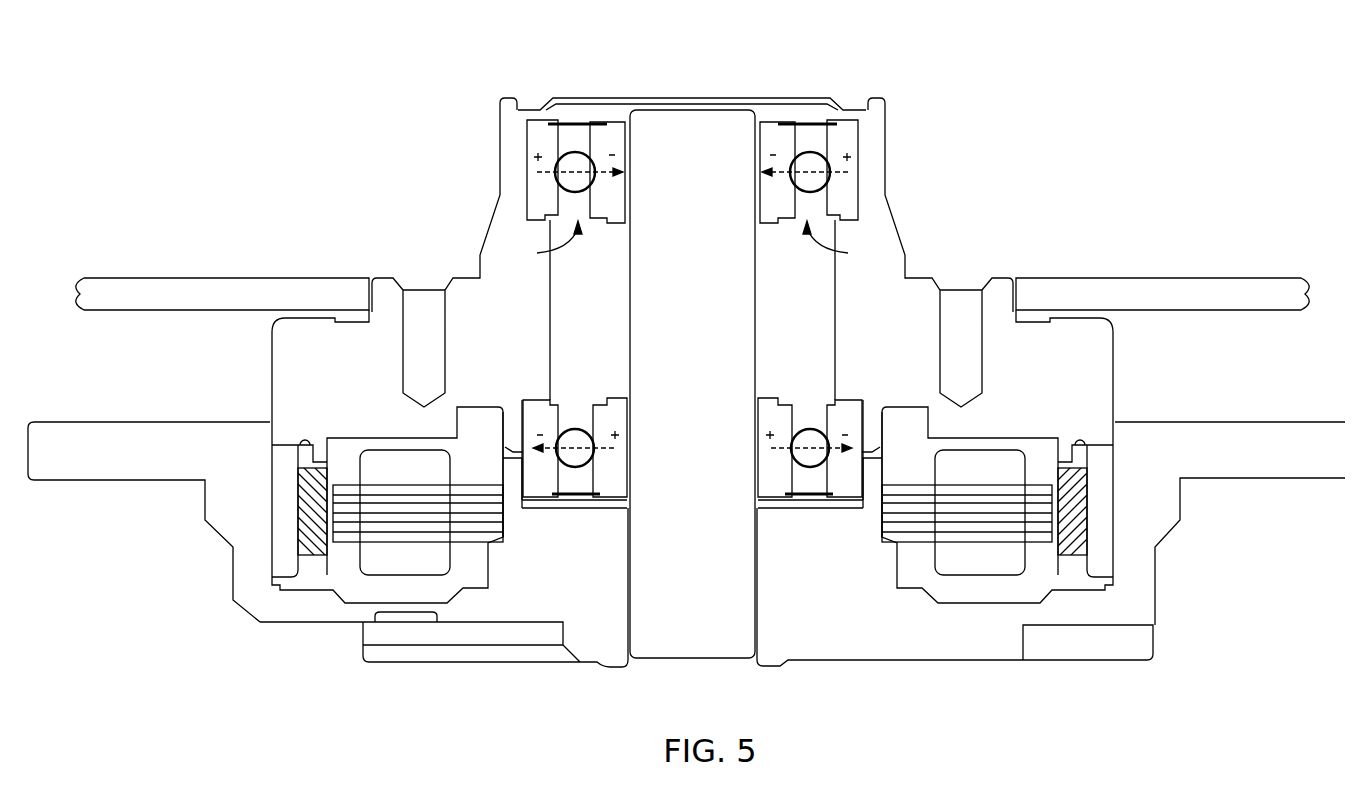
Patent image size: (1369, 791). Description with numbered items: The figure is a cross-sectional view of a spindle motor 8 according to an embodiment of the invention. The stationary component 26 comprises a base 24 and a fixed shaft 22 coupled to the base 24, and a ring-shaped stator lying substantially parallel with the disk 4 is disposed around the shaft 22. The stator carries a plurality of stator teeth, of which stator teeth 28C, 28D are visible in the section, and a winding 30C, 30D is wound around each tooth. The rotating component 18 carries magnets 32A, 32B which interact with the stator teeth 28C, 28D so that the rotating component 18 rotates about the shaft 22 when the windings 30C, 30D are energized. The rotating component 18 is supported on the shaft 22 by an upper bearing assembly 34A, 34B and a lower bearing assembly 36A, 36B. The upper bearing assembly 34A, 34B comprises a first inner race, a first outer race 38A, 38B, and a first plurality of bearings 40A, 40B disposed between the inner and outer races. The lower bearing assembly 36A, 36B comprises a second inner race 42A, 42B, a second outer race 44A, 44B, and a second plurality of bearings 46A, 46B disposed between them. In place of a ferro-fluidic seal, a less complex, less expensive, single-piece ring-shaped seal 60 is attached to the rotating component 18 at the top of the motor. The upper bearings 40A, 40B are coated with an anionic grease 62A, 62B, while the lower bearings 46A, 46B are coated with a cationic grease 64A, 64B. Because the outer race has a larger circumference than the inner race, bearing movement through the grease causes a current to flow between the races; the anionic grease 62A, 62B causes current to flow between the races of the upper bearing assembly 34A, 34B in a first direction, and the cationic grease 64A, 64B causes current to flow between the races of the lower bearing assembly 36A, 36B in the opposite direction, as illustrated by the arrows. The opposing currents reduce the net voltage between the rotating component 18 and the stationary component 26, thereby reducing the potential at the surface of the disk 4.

The disk 4 is at (263, 292).
The spindle motor 8 is at (1018, 134).
The rotating component 18 is at (692, 350).
The shaft 22 is at (692, 384).
The base 24 is at (263, 600).
The stationary component 26 is at (706, 587).
The stator tooth 28C is at (476, 521).
The stator tooth 28D is at (910, 521).
The winding 30C is at (380, 468).
The winding 30D is at (1005, 468).
The magnet 32A is at (313, 531).
The magnet 32B is at (1072, 531).
The upper bearing assembly 34A is at (537, 253).
The upper bearing assembly 34B is at (848, 253).
The lower bearing assembly 36A is at (613, 198).
The lower bearing assembly 36B is at (768, 141).
The first outer race 38A is at (537, 207).
The first outer race 38B is at (848, 207).
The first plurality of bearings 40A is at (560, 148).
The first plurality of bearings 40B is at (825, 148).
The second inner race 42A is at (618, 470).
The second inner race 42B is at (767, 417).
The second outer race 44A is at (540, 413).
The second outer race 44B is at (845, 413).
The second plurality of bearings 46A is at (580, 458).
The second plurality of bearings 46B is at (805, 458).
The ring-shaped seal 60 is at (694, 97).
The anionic grease 62A is at (572, 162).
The anionic grease 62B is at (813, 162).
The cationic grease 64A is at (570, 495).
The cationic grease 64B is at (815, 495).